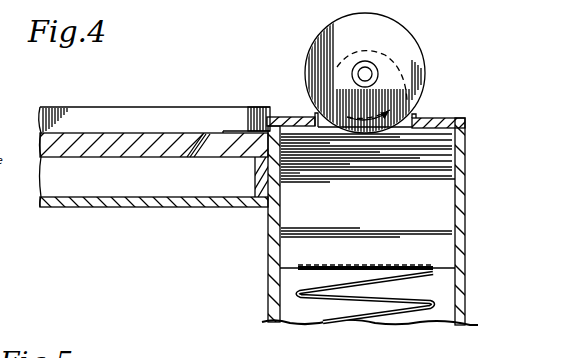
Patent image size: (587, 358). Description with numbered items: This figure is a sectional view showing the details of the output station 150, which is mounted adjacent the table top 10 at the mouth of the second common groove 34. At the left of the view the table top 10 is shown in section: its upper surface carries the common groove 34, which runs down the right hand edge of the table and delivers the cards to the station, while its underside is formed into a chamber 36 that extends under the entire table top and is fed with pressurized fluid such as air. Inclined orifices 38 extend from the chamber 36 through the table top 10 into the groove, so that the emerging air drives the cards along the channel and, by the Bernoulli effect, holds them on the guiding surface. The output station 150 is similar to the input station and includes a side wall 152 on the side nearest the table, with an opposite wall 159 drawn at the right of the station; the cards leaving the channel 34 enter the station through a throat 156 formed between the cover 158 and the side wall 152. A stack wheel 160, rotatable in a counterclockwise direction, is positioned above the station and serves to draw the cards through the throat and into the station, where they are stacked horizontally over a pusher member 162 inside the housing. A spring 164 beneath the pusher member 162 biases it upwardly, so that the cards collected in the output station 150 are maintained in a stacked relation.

The table top 10 is at (120, 150).
The second common groove 34 is at (160, 120).
The chamber 36 is at (122, 175).
The orifices 38 is at (198, 135).
The output station 150 is at (372, 193).
The side wall 152 is at (269, 258).
The throat 156 is at (249, 120).
The cover 158 is at (288, 117).
The housing right wall 159 is at (460, 298).
The stack wheel 160 is at (408, 62).
The pusher member 162 is at (442, 253).
The spring 164 is at (380, 320).